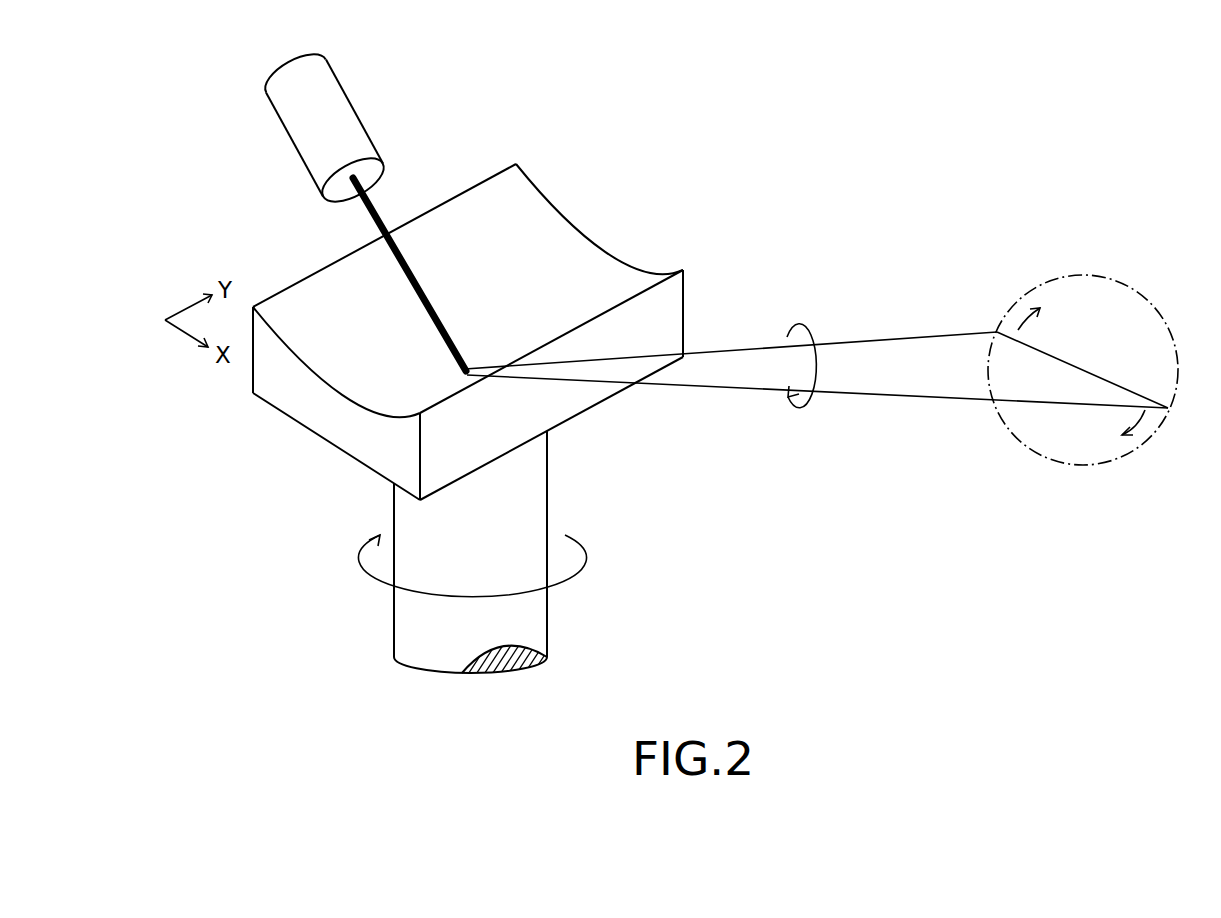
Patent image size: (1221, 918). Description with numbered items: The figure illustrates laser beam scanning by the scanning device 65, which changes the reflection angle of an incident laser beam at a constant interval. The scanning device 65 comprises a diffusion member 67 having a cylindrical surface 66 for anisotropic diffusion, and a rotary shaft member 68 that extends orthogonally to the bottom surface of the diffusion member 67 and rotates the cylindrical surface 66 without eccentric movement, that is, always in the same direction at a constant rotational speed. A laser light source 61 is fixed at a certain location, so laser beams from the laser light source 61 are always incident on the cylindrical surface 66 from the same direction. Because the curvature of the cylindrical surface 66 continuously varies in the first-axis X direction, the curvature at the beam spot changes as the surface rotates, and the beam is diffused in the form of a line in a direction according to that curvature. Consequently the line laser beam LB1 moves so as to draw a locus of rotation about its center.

The laser light source 61 is at (323, 93).
The scanning device 65 is at (318, 498).
The cylindrical surface 66 is at (517, 198).
The diffusion member 67 is at (293, 403).
The rotary shaft member 68 is at (528, 488).
The line laser beam LB1 is at (1080, 365).